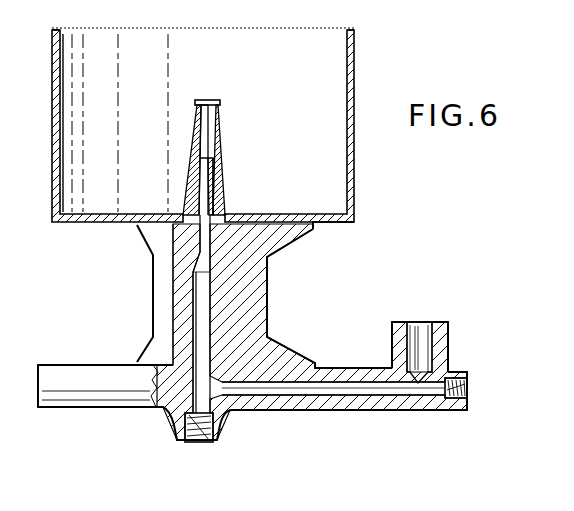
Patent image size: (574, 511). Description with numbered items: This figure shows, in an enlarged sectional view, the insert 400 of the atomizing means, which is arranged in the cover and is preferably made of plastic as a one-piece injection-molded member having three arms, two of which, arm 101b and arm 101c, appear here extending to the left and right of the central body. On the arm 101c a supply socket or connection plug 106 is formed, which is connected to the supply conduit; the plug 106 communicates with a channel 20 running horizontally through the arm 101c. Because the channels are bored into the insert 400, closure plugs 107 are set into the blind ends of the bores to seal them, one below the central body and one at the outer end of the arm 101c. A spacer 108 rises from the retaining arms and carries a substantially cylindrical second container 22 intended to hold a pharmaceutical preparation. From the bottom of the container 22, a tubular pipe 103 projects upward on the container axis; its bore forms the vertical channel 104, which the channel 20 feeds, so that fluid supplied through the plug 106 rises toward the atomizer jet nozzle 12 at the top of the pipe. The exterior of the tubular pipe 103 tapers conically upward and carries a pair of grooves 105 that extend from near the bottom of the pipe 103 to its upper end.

The atomizer jet nozzle 12 is at (212, 92).
The channel 20 is at (368, 392).
The second container 22 is at (357, 190).
The tubular pipe 103 is at (214, 158).
The vertical channel 104 is at (205, 190).
The grooves 105 is at (186, 114).
The supply socket or connection plug 106 is at (446, 323).
The closure plugs 107 is at (192, 436).
The spacer 108 is at (243, 297).
The insert 400 is at (140, 281).
The arm 101b is at (77, 383).
The arm 101c is at (437, 410).